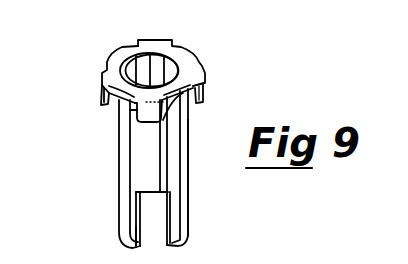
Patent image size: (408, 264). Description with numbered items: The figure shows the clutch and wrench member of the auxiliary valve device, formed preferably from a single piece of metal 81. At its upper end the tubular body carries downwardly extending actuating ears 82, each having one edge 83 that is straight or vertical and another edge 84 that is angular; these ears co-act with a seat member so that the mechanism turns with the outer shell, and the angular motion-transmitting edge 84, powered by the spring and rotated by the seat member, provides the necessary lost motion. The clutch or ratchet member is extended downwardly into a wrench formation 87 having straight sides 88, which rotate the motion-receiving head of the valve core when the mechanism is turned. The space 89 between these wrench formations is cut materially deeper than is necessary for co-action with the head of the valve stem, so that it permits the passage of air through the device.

The single piece of metal 81 is at (114, 158).
The actuating ears 82 is at (102, 92).
The straight edge 83 is at (136, 112).
The angular edge 84 is at (182, 106).
The wrench formation 87 is at (192, 221).
The straight sides 88 is at (140, 228).
The space 89 is at (152, 210).